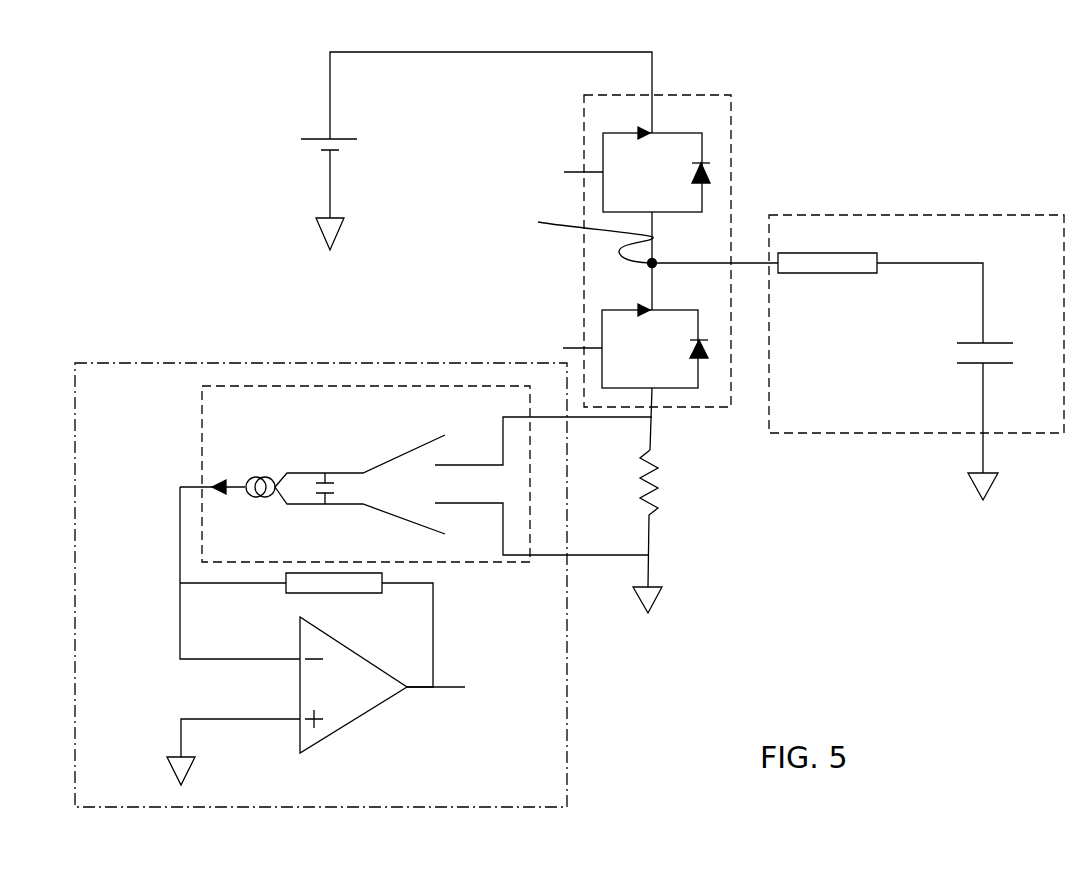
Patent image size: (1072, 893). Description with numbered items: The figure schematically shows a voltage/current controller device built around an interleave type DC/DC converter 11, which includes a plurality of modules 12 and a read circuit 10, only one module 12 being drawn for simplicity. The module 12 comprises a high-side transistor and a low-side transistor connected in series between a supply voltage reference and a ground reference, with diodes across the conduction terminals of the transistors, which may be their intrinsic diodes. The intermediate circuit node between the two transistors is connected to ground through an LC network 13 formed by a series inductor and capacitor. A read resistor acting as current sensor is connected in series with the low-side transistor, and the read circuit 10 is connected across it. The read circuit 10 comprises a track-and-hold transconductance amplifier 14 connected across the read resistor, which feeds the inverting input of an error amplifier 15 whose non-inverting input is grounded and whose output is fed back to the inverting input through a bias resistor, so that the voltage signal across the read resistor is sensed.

The read circuit 10 is at (123, 382).
The DC/DC converter 11 is at (184, 216).
The module 12 is at (692, 113).
The LC network 13 is at (917, 246).
The track-and-hold transconductance amplifier 14 is at (317, 413).
The error amplifier 15 is at (353, 690).